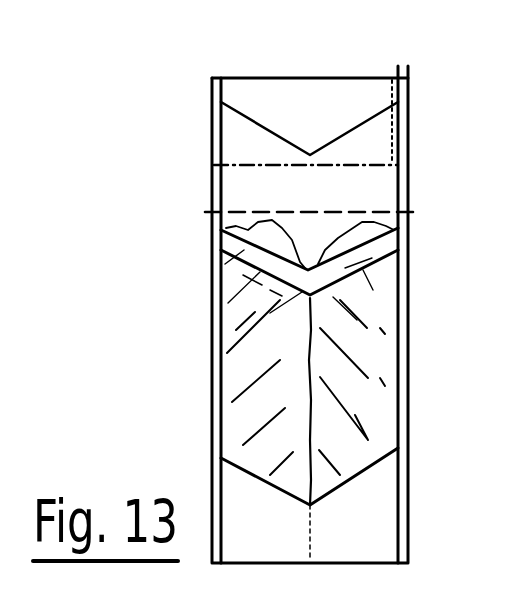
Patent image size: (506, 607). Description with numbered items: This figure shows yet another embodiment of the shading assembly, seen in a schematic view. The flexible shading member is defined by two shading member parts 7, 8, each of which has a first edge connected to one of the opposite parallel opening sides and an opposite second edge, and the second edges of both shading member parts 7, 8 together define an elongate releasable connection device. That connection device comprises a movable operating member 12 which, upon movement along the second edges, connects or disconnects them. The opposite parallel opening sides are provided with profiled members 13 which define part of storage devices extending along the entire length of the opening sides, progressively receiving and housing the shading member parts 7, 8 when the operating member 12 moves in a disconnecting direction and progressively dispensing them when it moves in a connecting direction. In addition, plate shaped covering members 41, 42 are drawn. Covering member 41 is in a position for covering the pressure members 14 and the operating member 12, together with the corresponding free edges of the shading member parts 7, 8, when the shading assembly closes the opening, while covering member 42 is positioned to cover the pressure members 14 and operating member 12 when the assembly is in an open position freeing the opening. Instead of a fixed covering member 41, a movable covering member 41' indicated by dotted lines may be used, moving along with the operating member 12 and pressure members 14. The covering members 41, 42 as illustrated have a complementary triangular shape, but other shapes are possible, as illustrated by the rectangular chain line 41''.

The covering member 41 is at (310, 91).
The chain line 41'' is at (266, 150).
The movable covering member 41' is at (417, 146).
The profiled member 13 is at (216, 200).
The pressure member 14 is at (217, 243).
The operating member 12 is at (316, 262).
The shading member part 8 is at (240, 366).
The shading member part 7 is at (388, 364).
The covering member 42 is at (386, 532).